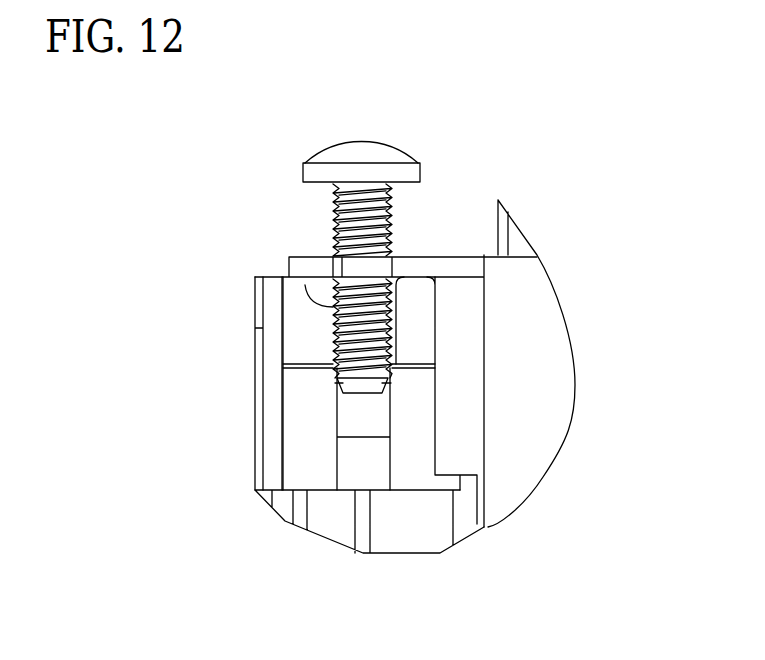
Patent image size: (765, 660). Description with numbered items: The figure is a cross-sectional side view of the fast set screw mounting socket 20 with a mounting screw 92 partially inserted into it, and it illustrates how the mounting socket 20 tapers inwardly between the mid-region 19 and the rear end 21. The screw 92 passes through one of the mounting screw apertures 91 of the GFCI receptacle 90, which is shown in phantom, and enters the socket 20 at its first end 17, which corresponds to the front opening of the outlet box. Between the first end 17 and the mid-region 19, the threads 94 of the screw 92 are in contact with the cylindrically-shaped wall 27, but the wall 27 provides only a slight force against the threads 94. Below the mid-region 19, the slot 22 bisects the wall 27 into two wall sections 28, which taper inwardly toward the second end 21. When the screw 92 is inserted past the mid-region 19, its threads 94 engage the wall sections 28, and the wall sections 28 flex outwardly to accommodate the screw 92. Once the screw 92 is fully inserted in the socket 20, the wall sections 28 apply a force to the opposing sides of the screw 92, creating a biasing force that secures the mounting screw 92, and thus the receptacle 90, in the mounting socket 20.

The first end 17 is at (403, 283).
The mid-region 19 is at (417, 365).
The fast set screw mounting socket 20 is at (307, 282).
The second end 21 is at (393, 490).
The slot 22 is at (360, 460).
The cylindrically-shaped wall 27 is at (300, 313).
The wall sections 28 is at (308, 400).
The GFCI receptacle 90 is at (473, 269).
The mounting screw apertures 91 is at (403, 264).
The screw 92 is at (358, 155).
The threads 94 is at (392, 328).